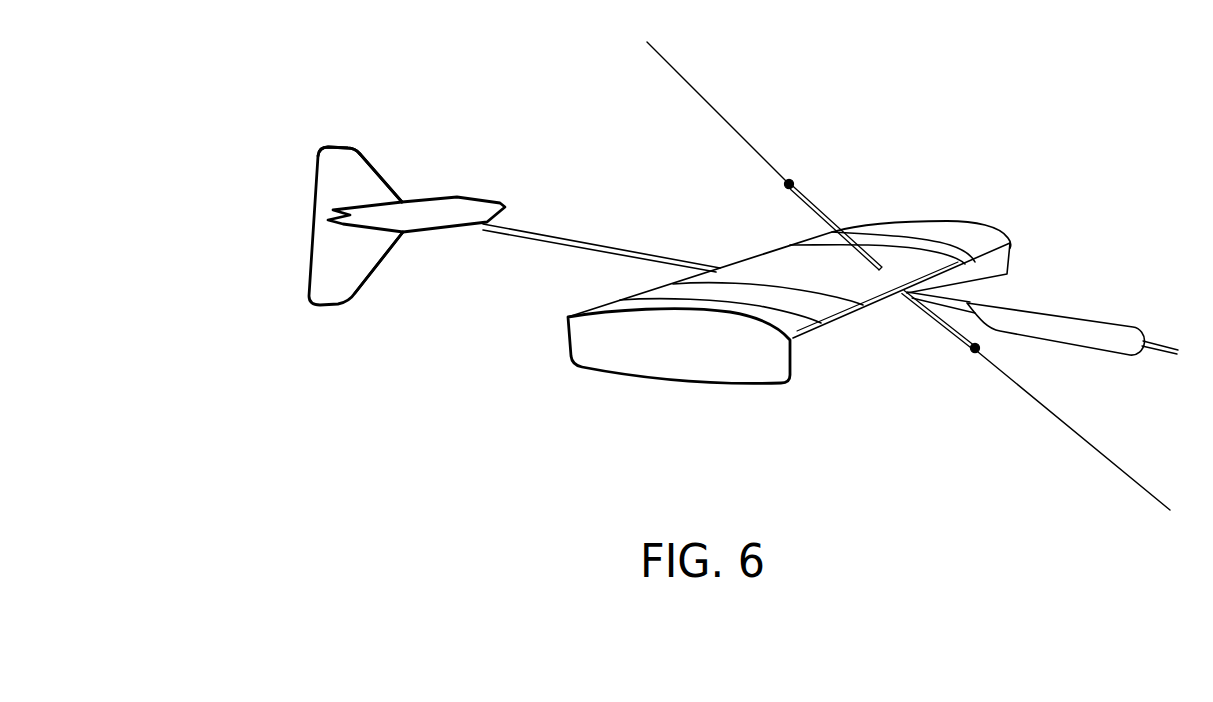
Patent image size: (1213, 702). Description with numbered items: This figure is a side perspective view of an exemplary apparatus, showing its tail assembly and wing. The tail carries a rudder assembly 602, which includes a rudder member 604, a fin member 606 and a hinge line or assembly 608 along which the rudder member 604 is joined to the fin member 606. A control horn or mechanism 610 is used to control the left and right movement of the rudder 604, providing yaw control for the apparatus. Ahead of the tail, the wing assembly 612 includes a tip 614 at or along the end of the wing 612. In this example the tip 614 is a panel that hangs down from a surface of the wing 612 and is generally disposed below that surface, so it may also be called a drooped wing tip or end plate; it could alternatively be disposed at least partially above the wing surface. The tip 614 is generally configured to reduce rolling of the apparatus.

The rudder assembly 602 is at (455, 190).
The rudder member 604 is at (332, 182).
The fin member 606 is at (372, 180).
The hinge line or assembly 608 is at (347, 157).
The control horn or mechanism 610 is at (340, 226).
The wing assembly 612 is at (913, 228).
The tip 614 is at (685, 357).